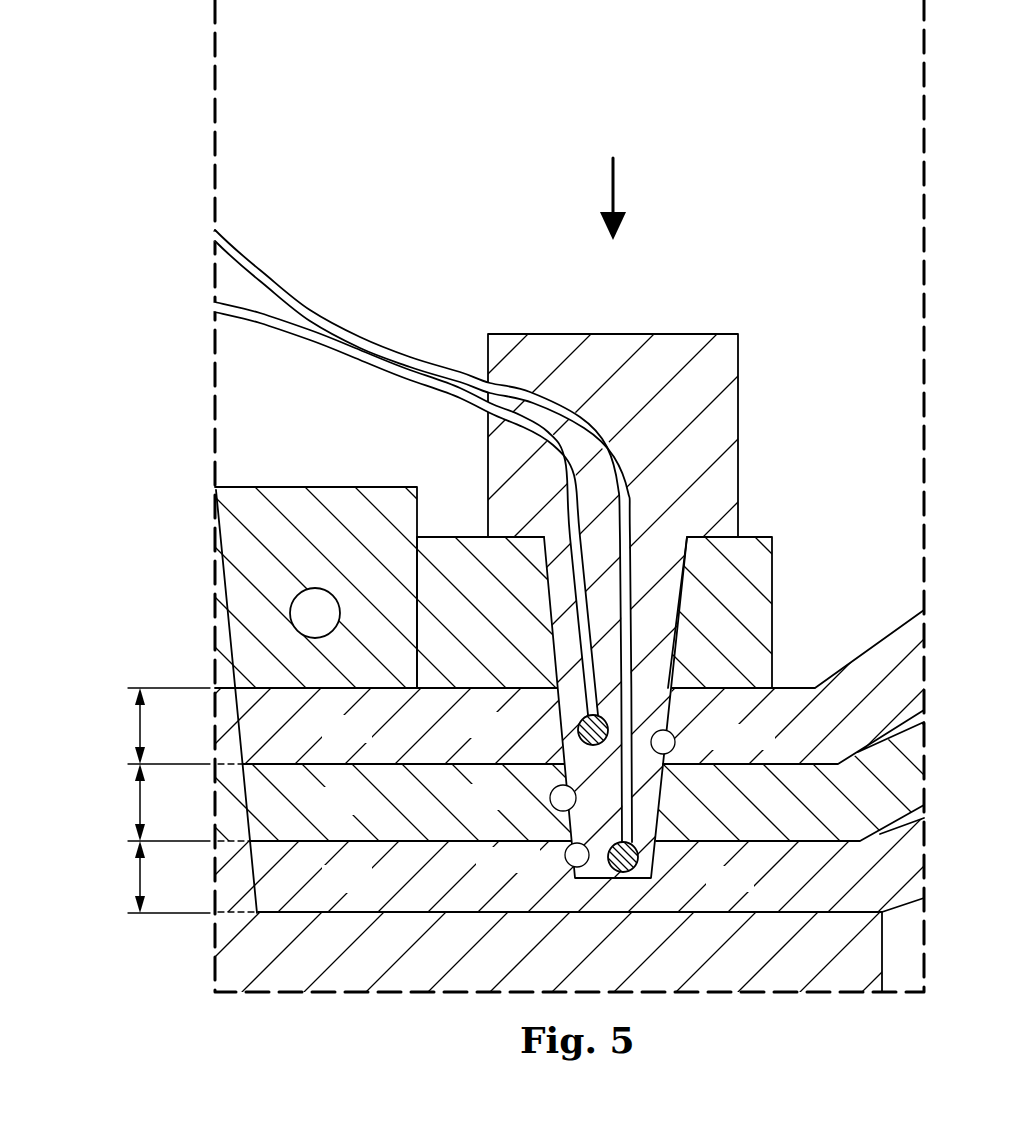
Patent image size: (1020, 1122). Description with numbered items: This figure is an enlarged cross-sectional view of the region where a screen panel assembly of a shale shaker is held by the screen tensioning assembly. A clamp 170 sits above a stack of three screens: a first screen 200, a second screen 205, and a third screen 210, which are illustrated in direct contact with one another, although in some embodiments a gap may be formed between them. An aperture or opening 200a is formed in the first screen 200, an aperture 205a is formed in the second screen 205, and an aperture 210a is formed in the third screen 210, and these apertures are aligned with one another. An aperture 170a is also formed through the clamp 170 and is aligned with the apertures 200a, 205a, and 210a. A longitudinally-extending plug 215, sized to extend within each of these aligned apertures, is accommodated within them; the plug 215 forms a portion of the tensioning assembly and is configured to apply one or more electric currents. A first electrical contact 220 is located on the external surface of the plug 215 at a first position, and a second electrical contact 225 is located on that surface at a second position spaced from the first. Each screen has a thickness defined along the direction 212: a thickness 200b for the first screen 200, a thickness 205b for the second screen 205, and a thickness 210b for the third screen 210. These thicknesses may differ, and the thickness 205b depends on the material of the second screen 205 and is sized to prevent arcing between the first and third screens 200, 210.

The clamp 170 is at (287, 495).
The aperture 170a is at (683, 538).
The first screen 200 is at (569, 687).
The aperture 200a is at (676, 735).
The thickness 200b is at (140, 724).
The second screen 205 is at (569, 782).
The aperture 205a is at (550, 798).
The thickness 205b is at (140, 800).
The third screen 210 is at (569, 865).
The aperture 210a is at (570, 859).
The thickness 210b is at (140, 880).
The direction 212 is at (614, 186).
The plug 215 is at (555, 333).
The first electrical contact 220 is at (568, 745).
The second electrical contact 225 is at (640, 852).